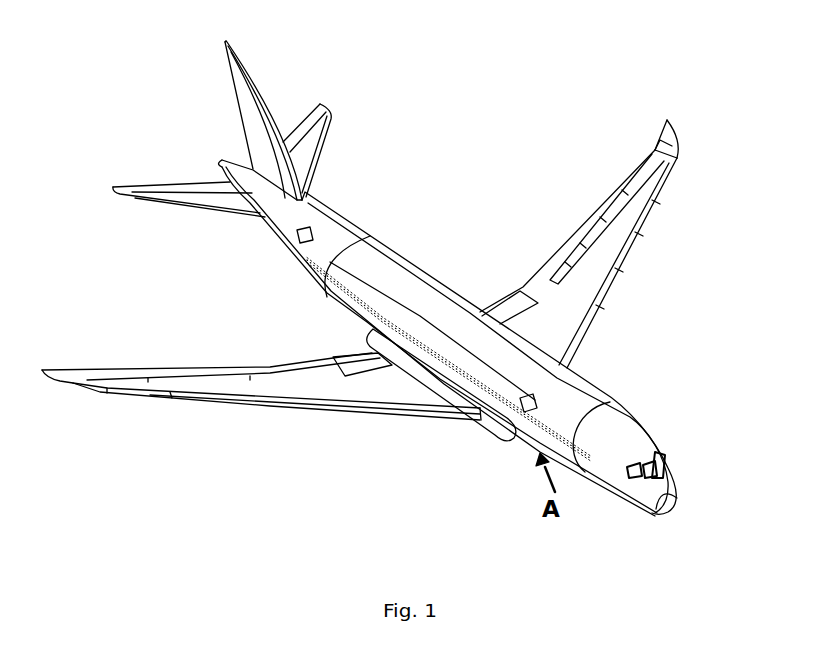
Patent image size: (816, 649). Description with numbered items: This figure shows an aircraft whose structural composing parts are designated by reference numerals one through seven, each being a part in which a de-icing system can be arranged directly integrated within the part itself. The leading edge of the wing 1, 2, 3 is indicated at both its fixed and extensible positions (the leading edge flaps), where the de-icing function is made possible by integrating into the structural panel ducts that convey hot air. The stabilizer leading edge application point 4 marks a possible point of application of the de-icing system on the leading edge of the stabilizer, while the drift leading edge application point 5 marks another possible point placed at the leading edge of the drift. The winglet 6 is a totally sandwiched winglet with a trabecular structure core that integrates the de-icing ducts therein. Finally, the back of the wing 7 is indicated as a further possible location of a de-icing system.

The leading edge of the wing 1 is at (573, 341).
The leading edge of the wing 2 is at (623, 243).
The leading edge of the wing 3 is at (665, 178).
The stabilizer leading edge application point 4 is at (320, 152).
The drift leading edge application point 5 is at (267, 102).
The winglet 6 is at (85, 383).
The back of the wing 7 is at (410, 388).